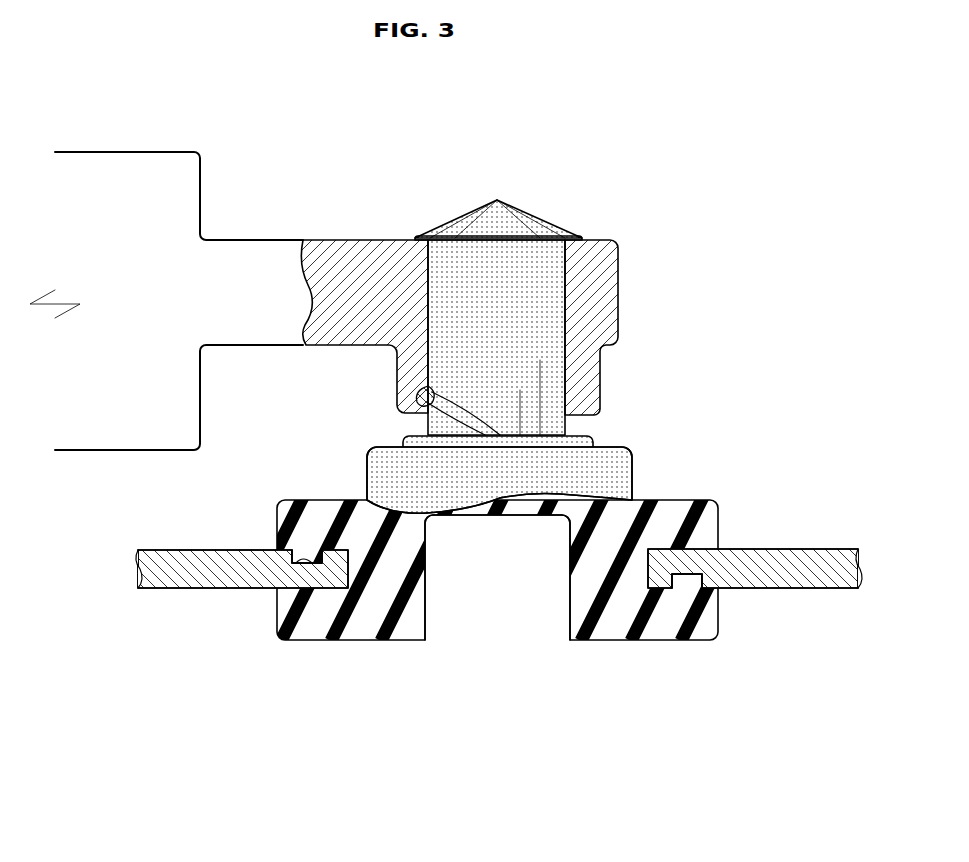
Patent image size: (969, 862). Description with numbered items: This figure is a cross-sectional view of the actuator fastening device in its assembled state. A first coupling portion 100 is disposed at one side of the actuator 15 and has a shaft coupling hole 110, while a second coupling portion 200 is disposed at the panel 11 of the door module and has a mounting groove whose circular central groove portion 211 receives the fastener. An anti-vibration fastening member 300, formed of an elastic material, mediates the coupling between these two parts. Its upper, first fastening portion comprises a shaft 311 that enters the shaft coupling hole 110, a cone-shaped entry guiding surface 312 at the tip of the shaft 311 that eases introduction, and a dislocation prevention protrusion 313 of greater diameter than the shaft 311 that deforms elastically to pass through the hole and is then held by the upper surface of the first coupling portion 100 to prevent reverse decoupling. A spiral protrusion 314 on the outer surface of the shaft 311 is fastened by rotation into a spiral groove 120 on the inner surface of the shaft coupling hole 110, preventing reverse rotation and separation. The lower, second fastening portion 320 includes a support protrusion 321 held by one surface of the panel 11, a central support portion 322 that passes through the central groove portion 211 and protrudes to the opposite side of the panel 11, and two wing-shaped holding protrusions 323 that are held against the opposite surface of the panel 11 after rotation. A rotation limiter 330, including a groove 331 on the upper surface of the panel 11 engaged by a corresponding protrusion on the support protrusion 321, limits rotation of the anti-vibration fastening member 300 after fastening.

The actuator 15 is at (138, 168).
The first coupling portion 100 is at (636, 254).
The shaft coupling hole 110 is at (560, 332).
The spiral groove 120 is at (425, 390).
The anti-vibration fastening member 300 is at (680, 400).
The shaft 311 is at (545, 298).
The entry guiding surface 312 is at (462, 223).
The dislocation prevention protrusion 313 is at (576, 238).
The spiral protrusion 314 is at (428, 428).
The second coupling portion 200 is at (740, 515).
The second fastening portion 320 is at (498, 592).
The support protrusion 321 is at (685, 510).
The central support portion 322 is at (305, 558).
The holding protrusions 323 is at (283, 606).
The rotation limiter 330 is at (275, 545).
The groove 331 is at (305, 566).
The central groove portion 211 is at (350, 565).
The panel 11 is at (150, 590).